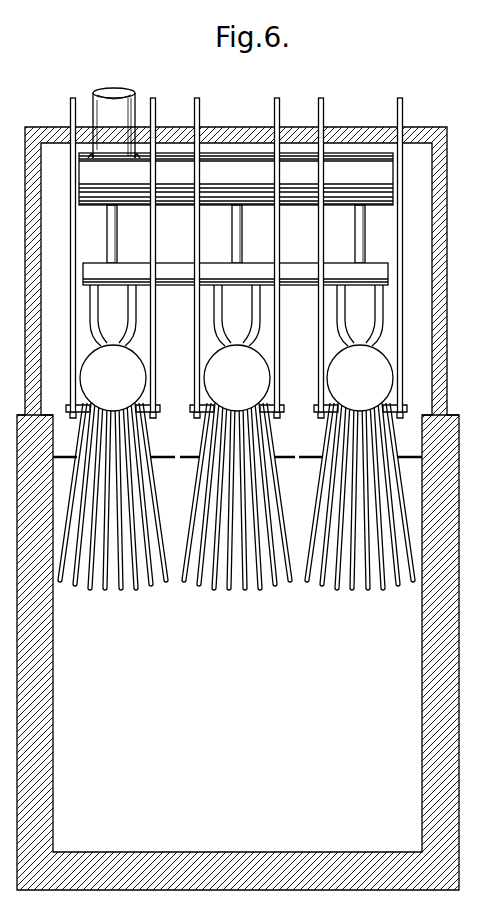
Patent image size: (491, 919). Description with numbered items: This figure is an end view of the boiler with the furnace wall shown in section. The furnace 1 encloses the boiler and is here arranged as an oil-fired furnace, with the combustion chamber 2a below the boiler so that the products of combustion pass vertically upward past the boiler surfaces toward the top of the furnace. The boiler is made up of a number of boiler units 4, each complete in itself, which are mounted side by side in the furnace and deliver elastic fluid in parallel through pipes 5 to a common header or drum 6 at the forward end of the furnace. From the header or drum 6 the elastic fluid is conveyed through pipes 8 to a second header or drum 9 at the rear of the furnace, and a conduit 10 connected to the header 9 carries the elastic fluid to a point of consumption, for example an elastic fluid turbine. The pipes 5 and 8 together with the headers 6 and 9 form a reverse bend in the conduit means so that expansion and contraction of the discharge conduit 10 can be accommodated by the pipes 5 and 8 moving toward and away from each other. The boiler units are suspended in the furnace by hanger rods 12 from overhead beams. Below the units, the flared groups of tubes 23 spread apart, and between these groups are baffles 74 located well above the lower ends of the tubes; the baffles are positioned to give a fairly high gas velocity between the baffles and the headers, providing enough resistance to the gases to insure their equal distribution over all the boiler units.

The furnace 1 is at (459, 765).
The combustion chamber 2a is at (207, 757).
The boiler unit 4 is at (205, 381).
The pipe 5 is at (371, 324).
The header or drum 6 is at (289, 262).
The pipe 8 is at (366, 241).
The header or drum 9 is at (236, 179).
The conduit 10 is at (137, 96).
The hanger rod 12 is at (405, 233).
The flexible tubes 23 is at (369, 591).
The baffle 74 is at (307, 456).